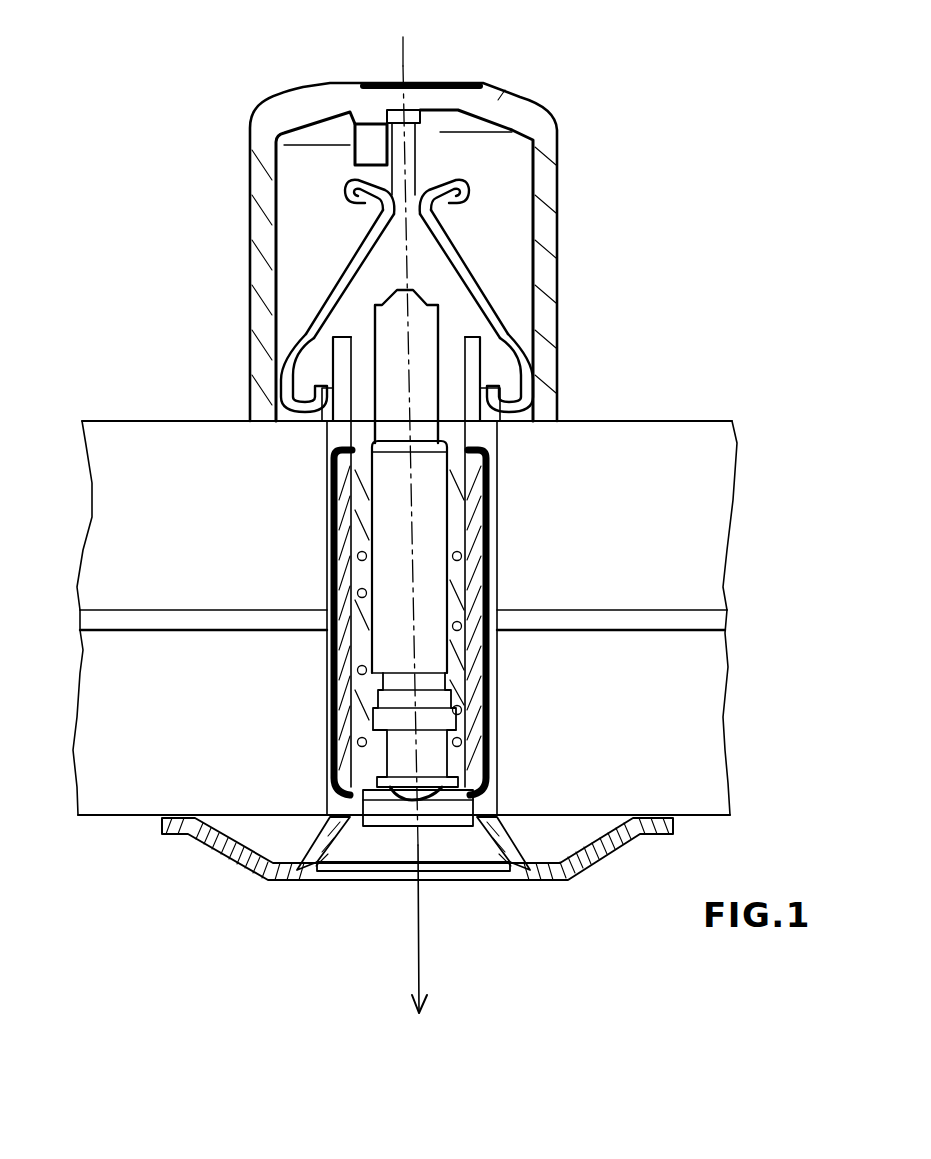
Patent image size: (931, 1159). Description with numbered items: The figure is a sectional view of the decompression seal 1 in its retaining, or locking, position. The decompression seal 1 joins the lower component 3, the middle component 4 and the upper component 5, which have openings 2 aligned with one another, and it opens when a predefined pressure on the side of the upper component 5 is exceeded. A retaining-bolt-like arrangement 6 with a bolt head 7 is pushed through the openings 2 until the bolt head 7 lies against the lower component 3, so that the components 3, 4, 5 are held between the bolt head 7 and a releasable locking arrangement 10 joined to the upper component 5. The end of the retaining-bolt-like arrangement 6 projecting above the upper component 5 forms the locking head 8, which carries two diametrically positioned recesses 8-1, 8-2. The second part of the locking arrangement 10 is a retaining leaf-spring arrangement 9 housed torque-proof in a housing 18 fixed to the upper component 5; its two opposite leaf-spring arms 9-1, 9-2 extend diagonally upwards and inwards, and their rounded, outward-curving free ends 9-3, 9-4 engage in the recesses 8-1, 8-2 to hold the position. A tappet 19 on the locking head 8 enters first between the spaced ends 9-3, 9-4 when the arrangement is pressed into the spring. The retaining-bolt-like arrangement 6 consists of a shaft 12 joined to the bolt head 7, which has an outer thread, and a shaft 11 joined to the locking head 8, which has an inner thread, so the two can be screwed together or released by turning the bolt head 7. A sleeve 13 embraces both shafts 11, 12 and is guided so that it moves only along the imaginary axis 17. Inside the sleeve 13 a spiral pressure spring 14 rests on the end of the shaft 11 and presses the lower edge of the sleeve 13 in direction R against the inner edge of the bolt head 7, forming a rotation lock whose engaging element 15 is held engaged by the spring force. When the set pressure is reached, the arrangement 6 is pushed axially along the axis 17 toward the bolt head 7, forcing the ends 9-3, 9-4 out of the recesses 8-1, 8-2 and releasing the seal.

The decompression seal 1 is at (417, 881).
The openings 2 is at (487, 798).
The lower component 3 is at (713, 713).
The component 4 is at (713, 620).
The upper component 5 is at (713, 550).
The retaining-bolt-like arrangement 6 is at (323, 430).
The bolt head 7 is at (475, 845).
The locking head 8 is at (414, 226).
The recess 8-1 is at (350, 180).
The recess 8-2 is at (470, 185).
The retaining leaf-spring arrangement 9 is at (415, 311).
The leaf-spring arm 9-1 is at (300, 335).
The leaf-spring arm 9-2 is at (505, 318).
The free end of leaf-spring arm 9-3 is at (370, 225).
The free end of leaf-spring arm 9-4 is at (420, 240).
The locking arrangement 10 is at (728, 225).
The shaft 11 is at (450, 425).
The shaft 12 is at (418, 498).
The sleeve 13 is at (480, 567).
The spiral pressure spring 14 is at (495, 607).
The engaging element 15 is at (453, 797).
The axis 17 is at (430, 525).
The housing 18 is at (500, 100).
The tappet 19 is at (400, 140).